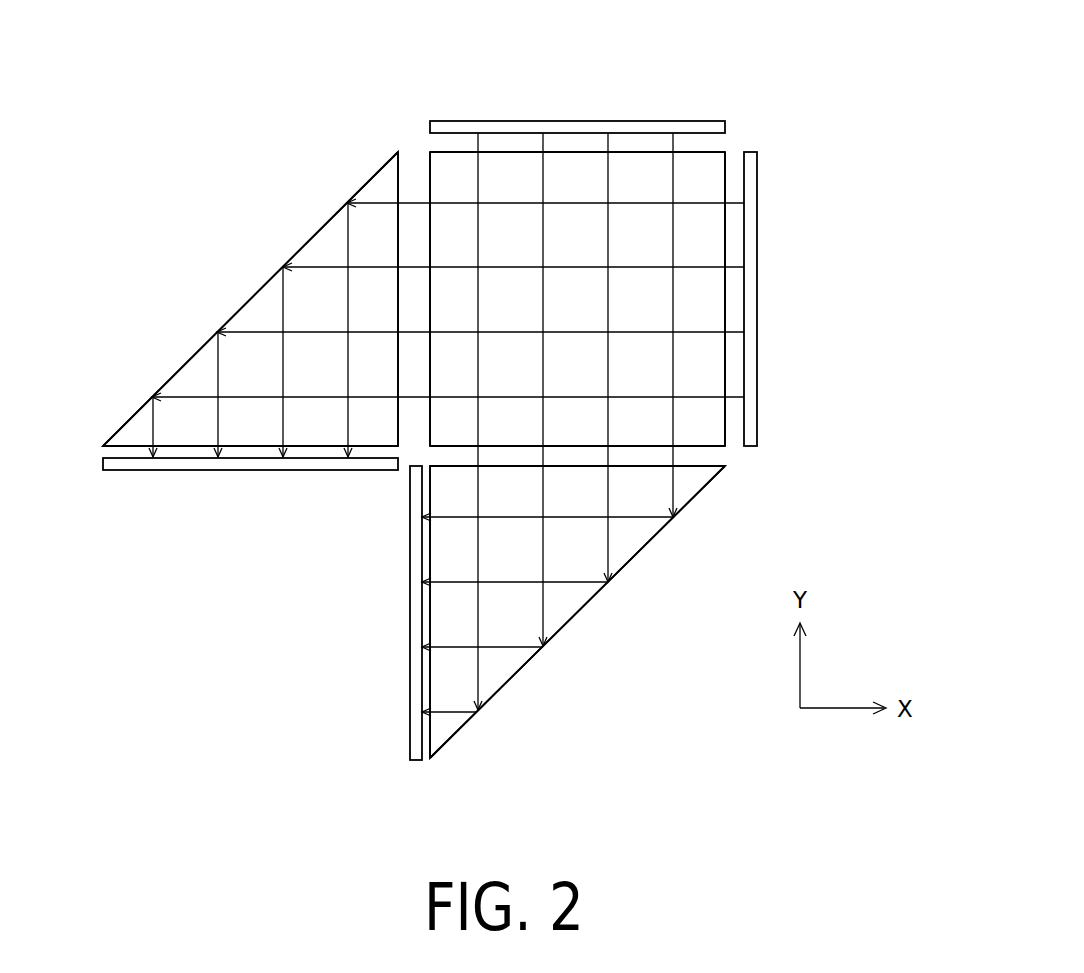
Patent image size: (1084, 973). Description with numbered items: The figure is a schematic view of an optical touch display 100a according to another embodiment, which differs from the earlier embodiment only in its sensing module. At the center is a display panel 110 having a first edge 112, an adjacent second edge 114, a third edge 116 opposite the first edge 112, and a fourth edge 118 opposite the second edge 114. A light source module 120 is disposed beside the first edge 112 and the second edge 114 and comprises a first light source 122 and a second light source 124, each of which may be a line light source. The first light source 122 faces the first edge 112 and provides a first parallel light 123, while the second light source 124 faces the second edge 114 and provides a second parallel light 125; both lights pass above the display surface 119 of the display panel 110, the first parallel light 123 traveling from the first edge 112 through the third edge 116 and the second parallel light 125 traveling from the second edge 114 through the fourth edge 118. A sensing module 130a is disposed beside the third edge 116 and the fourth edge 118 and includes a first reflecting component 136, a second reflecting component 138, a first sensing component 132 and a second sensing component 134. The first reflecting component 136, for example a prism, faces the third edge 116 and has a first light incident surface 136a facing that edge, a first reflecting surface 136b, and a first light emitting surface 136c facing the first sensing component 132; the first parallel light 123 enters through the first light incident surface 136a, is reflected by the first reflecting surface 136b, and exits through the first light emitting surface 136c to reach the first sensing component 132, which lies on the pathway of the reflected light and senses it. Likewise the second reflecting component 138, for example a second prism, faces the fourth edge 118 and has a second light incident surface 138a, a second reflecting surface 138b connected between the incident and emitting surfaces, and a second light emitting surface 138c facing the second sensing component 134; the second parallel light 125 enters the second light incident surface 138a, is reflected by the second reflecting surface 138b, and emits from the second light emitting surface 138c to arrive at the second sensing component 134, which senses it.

The optical touch display 100a is at (499, 387).
The display panel 110 is at (715, 438).
The first edge 112 is at (455, 148).
The second edge 114 is at (727, 185).
The third edge 116 is at (700, 450).
The fourth edge 118 is at (428, 178).
The display surface 119 is at (713, 418).
The light source module 120 is at (674, 274).
The first light source 122 is at (727, 128).
The first parallel light 123 is at (478, 143).
The second light source 124 is at (758, 168).
The second parallel light 125 is at (737, 203).
The sensing module 130a is at (421, 459).
The first sensing component 132 is at (412, 651).
The second sensing component 134 is at (341, 462).
The first reflecting component 136 is at (520, 610).
The first light incident surface 136a is at (598, 463).
The first reflecting surface 136b is at (597, 598).
The first light emitting surface 136c is at (433, 730).
The second reflecting component 138 is at (245, 389).
The second light incident surface 138a is at (403, 247).
The second reflecting surface 138b is at (196, 352).
The second light emitting surface 138c is at (130, 445).